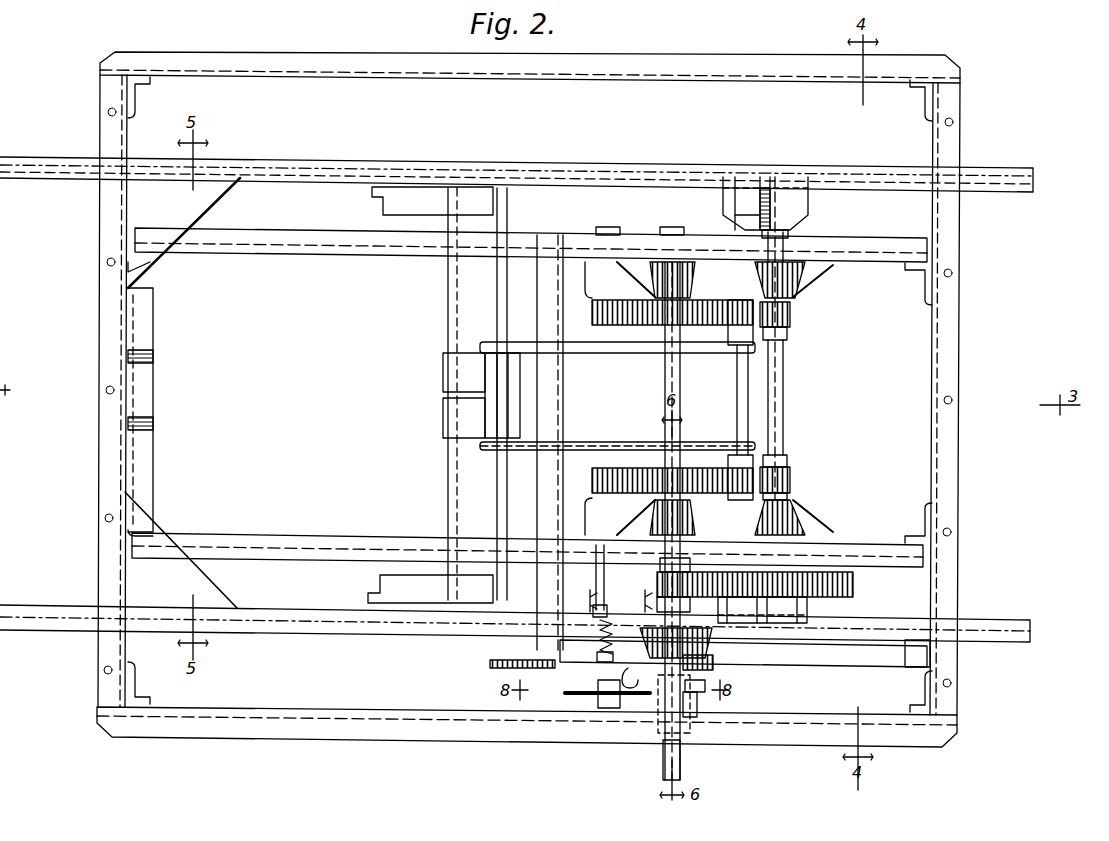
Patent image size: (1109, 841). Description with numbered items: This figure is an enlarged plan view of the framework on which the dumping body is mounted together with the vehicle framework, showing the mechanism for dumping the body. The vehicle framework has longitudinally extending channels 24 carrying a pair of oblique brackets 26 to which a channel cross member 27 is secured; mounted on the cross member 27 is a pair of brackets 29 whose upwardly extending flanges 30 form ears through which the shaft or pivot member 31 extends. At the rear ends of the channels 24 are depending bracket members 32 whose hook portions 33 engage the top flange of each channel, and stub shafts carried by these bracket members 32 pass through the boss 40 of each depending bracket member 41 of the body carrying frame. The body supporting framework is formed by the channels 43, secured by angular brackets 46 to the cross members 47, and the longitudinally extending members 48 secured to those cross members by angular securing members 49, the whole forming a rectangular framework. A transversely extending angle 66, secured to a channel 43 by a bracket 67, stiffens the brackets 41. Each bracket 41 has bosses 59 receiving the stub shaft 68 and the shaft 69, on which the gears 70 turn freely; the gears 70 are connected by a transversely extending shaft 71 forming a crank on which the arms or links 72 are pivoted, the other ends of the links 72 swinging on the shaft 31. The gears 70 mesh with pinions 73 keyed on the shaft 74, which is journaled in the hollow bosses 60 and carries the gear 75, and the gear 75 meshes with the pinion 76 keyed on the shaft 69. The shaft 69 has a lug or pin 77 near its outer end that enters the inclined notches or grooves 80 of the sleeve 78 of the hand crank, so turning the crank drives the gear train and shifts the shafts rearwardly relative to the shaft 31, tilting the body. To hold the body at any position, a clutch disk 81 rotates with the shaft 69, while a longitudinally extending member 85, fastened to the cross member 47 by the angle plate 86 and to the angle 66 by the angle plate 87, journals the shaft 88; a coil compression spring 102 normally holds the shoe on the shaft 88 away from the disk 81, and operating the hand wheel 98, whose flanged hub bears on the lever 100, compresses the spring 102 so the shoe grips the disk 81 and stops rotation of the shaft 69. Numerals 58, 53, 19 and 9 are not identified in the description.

The longitudinally extending members 48 is at (648, 83).
The cross members 47 is at (100, 352).
The angular securing members 49 is at (150, 92).
The channels 43 is at (515, 165).
The channels 24 is at (278, 612).
The angular brackets 46 is at (140, 255).
The side plate 58 is at (152, 315).
The plate section 53 is at (148, 398).
The brackets 26 is at (384, 205).
The cross member 27 is at (470, 500).
The brackets 29 is at (485, 400).
The flanges 30 is at (458, 353).
The shaft or pivot member 31 is at (508, 390).
The transversely extending angle 66 is at (553, 422).
The arms or links 72 is at (600, 353).
The stub shaft 68 is at (672, 227).
The shaft 74 is at (783, 380).
The depending bracket member 41 is at (716, 270).
The transversely extending shaft 71 is at (737, 372).
The gears 70 is at (640, 325).
The pinions 73 is at (790, 320).
The bosses 59 is at (660, 278).
The bracket 67 is at (613, 398).
The bosses 60 is at (790, 290).
The hook portions 33 is at (765, 180).
The depending bracket members 32 is at (800, 213).
The boss 40 is at (790, 238).
The gear 75 is at (853, 585).
The shaft 69 is at (660, 665).
The pinion 76 is at (660, 566).
The shaft 88 is at (610, 575).
The angle plate 87 is at (598, 640).
The coil compression spring 102 is at (597, 658).
The lever 100 is at (490, 666).
The hand wheel 98 is at (570, 690).
The clutch member or disk 81 is at (712, 665).
The inclined notches or grooves 80 is at (705, 690).
The lug or pin 77 is at (697, 705).
The sleeve 78 is at (660, 705).
The drive shaft 19 is at (680, 758).
The longitudinally extending member 85 is at (862, 670).
The angle plate 86 is at (925, 660).
The section indicator 9 is at (613, 593).